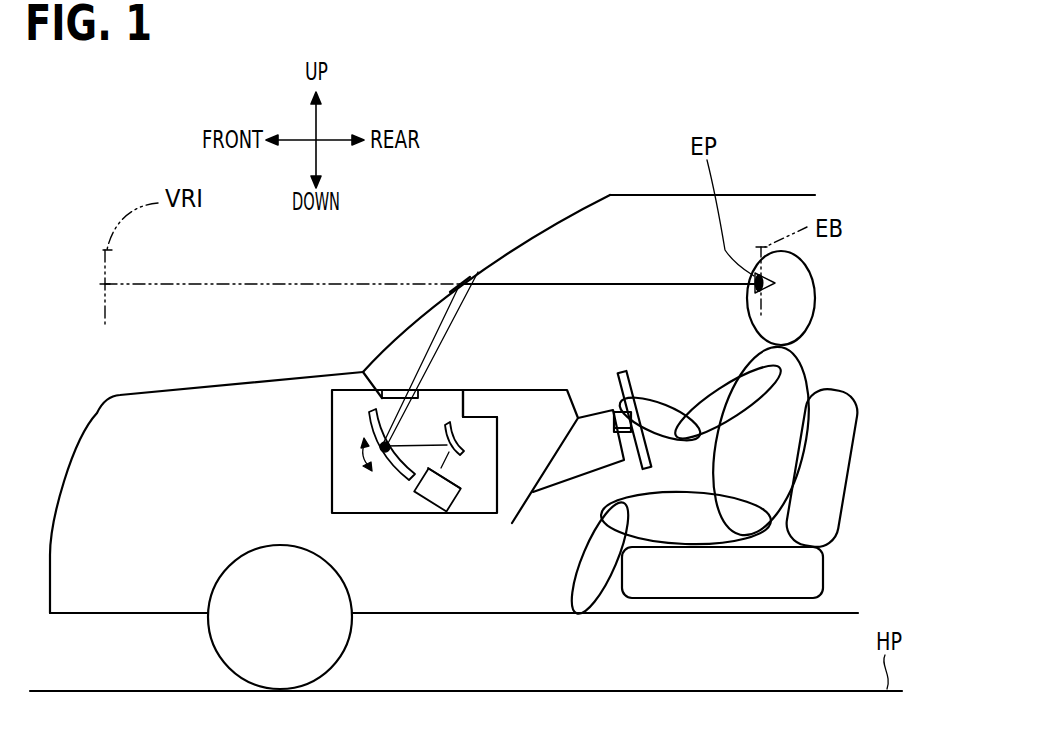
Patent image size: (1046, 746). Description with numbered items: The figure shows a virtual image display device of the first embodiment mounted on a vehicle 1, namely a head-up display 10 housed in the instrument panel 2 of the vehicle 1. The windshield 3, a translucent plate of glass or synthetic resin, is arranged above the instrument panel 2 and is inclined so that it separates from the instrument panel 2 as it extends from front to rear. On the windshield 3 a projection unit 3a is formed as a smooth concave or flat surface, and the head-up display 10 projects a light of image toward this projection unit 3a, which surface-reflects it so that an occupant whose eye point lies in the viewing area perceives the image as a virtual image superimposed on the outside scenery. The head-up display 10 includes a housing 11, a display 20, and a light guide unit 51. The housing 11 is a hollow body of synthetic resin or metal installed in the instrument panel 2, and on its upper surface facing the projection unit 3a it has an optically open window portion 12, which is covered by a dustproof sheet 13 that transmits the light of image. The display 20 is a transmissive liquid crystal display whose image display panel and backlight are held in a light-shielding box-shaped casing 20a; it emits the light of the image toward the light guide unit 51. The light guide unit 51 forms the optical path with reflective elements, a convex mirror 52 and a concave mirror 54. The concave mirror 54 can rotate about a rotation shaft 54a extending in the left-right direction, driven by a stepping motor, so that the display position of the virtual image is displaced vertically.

The vehicle 1 is at (783, 195).
The instrument panel 2 is at (540, 389).
The windshield 3 is at (532, 241).
The projection unit 3a is at (481, 274).
The head-up display 10 is at (402, 433).
The housing 11 is at (332, 511).
The window portion 12 is at (400, 390).
The dustproof sheet 13 is at (458, 390).
The display 20 is at (426, 503).
The casing 20a is at (458, 497).
The light guide unit 51 is at (402, 376).
The convex mirror 52 is at (462, 443).
The concave mirror 54 is at (374, 376).
The rotation shaft 54a is at (365, 437).